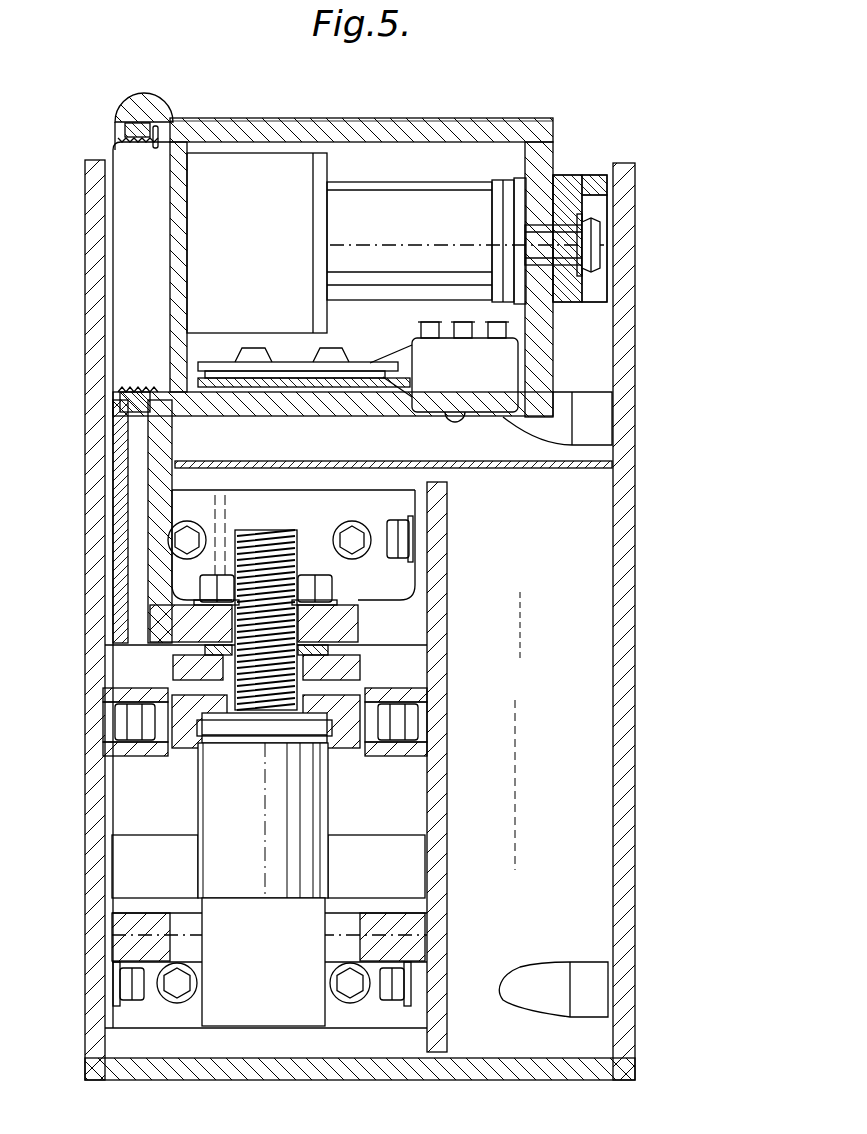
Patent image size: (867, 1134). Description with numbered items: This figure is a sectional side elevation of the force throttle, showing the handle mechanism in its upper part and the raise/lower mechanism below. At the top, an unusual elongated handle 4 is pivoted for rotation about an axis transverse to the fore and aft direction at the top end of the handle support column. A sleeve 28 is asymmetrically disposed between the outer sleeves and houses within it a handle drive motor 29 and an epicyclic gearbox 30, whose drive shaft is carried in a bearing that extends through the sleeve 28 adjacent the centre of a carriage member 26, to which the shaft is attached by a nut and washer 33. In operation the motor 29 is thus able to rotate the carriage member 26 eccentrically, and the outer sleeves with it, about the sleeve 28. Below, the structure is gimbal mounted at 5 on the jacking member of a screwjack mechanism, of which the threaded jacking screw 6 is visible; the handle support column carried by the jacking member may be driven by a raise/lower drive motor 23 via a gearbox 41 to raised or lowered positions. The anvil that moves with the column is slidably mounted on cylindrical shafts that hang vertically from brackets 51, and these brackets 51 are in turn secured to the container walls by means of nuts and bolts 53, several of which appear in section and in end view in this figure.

The elongated handle 4 is at (138, 103).
The sleeve 28 is at (362, 135).
The epicyclic gearbox 30 is at (260, 170).
The handle drive motor 29 is at (437, 197).
The carriage member 26 is at (578, 182).
The nut and washer 33 is at (586, 229).
The threaded shaft 6 is at (264, 530).
The nuts and bolts 53 is at (355, 533).
The brackets 51 is at (408, 620).
The gimbal mounting 5 is at (130, 716).
The gearbox 41 is at (222, 805).
The raise/lower drive motor 23 is at (254, 1026).